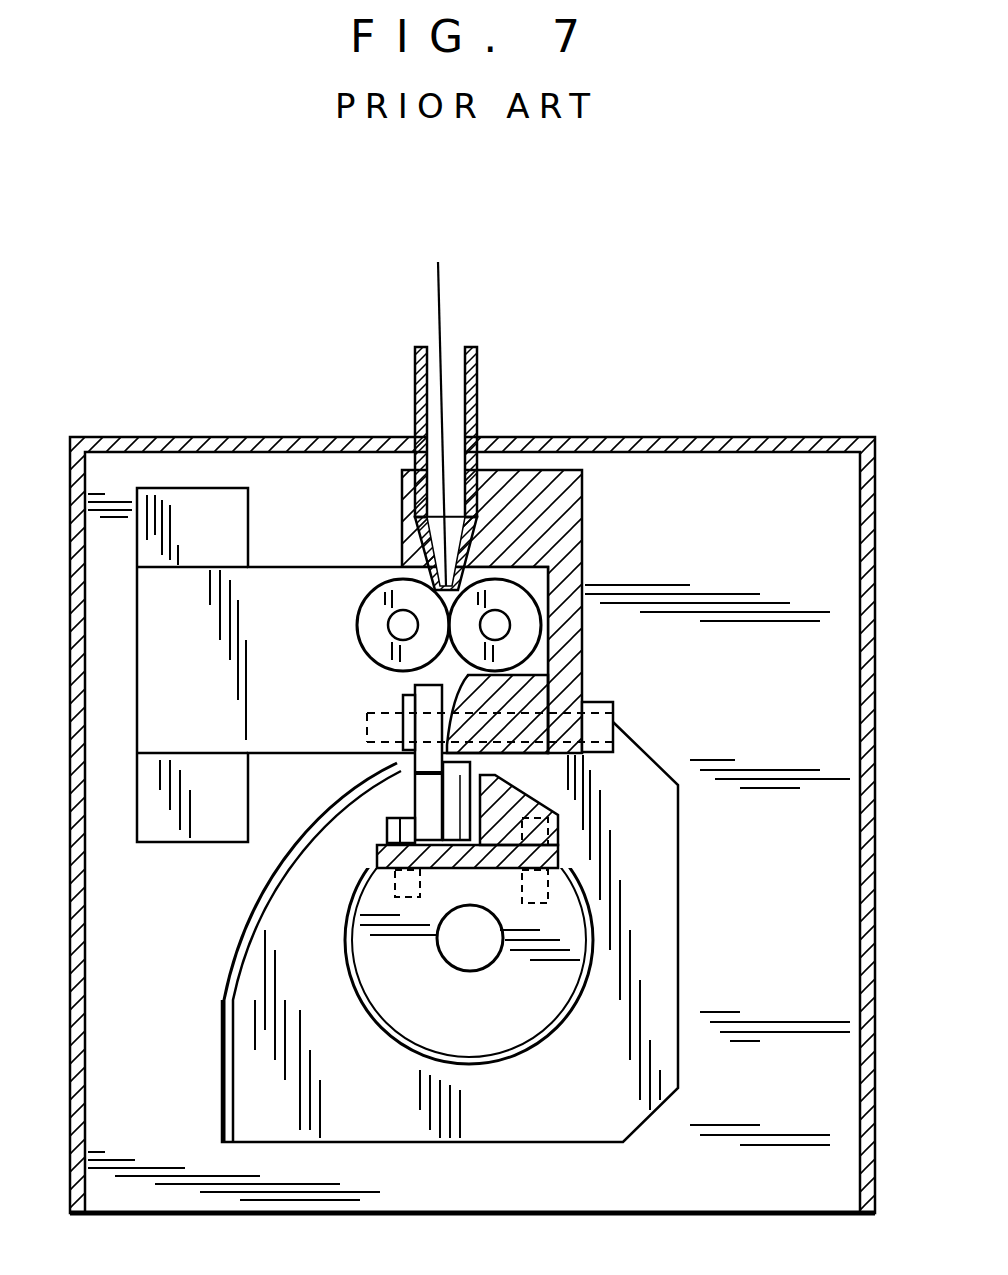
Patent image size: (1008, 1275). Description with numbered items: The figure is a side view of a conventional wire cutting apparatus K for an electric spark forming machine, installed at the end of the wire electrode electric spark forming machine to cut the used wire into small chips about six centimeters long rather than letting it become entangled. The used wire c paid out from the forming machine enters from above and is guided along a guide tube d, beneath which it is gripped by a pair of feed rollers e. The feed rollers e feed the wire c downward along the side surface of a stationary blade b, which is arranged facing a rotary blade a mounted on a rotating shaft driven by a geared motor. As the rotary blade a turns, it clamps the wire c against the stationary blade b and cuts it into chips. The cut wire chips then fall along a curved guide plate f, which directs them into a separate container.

The wire cutting apparatus K is at (713, 410).
The wire c is at (442, 308).
The guide tube d is at (473, 405).
The feed rollers e is at (527, 617).
The stationary blade b is at (415, 698).
The rotary blade a is at (415, 800).
The guide plate f is at (222, 953).